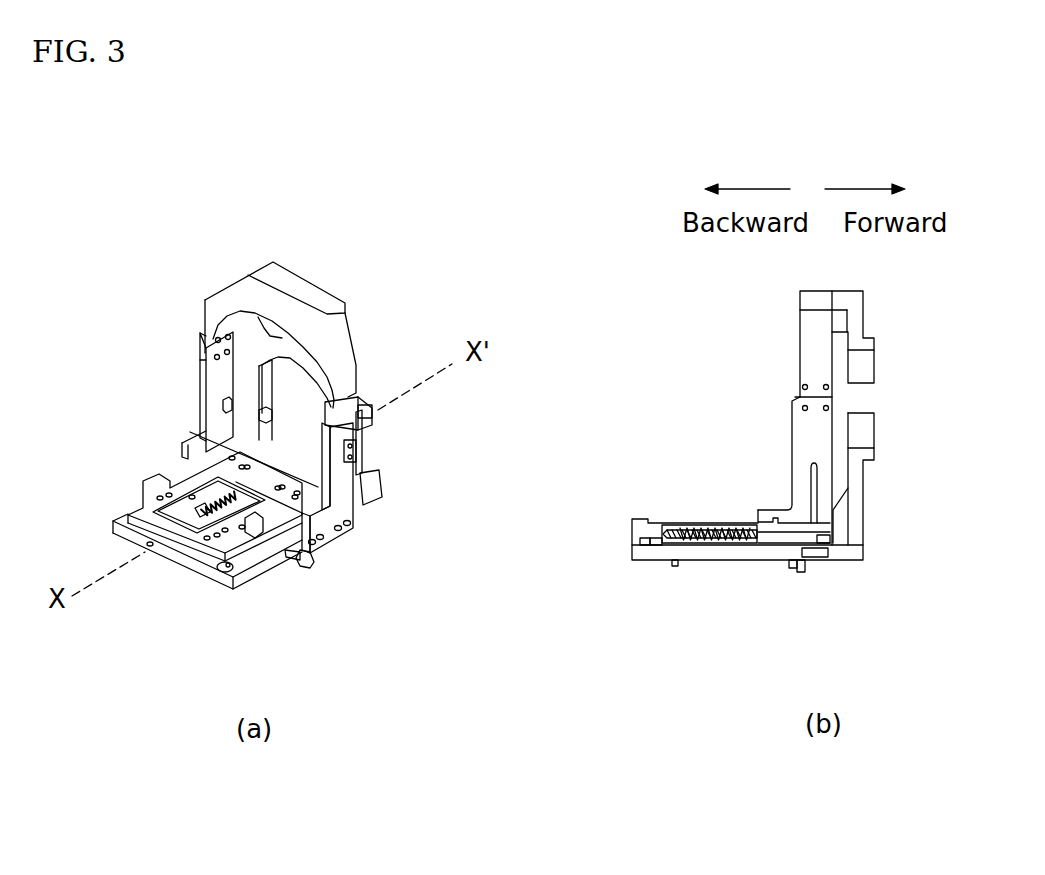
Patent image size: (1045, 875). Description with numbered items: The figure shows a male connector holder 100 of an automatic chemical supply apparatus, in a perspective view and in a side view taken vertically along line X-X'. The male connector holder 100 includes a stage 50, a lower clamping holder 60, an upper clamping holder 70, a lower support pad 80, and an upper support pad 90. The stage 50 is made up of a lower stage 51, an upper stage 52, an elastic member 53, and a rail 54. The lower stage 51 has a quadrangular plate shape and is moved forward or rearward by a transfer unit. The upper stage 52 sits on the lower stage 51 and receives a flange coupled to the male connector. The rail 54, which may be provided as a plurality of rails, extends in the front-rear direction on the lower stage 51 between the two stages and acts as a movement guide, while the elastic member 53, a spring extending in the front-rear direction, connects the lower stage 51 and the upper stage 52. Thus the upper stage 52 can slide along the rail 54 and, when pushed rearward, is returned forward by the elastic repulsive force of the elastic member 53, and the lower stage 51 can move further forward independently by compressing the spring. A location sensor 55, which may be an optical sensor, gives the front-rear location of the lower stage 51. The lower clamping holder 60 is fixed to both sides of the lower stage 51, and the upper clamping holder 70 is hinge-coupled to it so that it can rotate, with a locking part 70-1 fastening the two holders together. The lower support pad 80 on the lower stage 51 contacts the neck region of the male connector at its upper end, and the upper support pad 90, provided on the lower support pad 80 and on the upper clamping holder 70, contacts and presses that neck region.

The male connector holder 100 is at (193, 217).
The stage 50 is at (152, 445).
The lower stage 51 is at (176, 563).
The upper stage 52 is at (203, 552).
The elastic member 53 is at (696, 543).
The rail 54 is at (263, 531).
The location sensor 55 is at (818, 558).
The lower clamping holder 60 is at (202, 397).
The upper clamping holder 70 is at (338, 348).
The locking part 70-1 is at (372, 440).
The lower support pad 80 is at (303, 393).
The upper support pad 90 is at (290, 270).